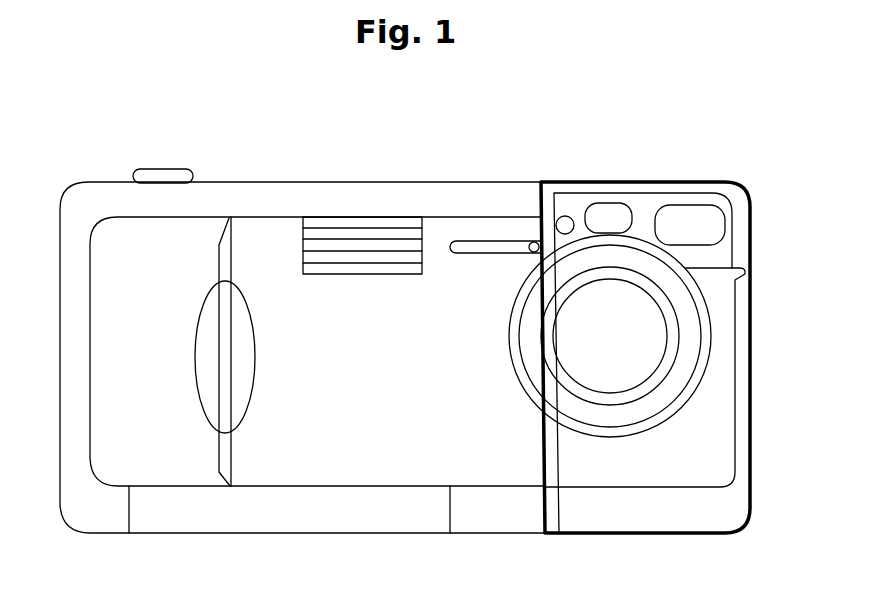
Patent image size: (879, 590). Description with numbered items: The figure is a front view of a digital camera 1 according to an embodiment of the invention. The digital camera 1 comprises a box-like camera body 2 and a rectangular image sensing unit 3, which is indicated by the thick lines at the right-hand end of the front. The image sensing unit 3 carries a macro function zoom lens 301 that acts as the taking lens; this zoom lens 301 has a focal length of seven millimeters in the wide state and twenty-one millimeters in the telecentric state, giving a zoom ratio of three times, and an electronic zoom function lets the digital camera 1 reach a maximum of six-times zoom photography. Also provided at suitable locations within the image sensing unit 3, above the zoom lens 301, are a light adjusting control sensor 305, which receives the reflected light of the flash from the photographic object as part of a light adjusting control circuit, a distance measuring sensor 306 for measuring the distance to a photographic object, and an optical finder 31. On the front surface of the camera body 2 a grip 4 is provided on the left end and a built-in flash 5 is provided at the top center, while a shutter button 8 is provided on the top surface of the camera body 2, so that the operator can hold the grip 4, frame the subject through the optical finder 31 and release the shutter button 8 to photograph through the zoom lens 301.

The digital camera 1 is at (407, 107).
The camera body 2 is at (247, 170).
The image sensing unit 3 is at (598, 166).
The grip 4 is at (98, 355).
The built-in flash 5 is at (372, 270).
The shutter button 8 is at (170, 173).
The optical finder 31 is at (683, 215).
The zoom lens 301 is at (712, 323).
The light adjusting control sensor 305 is at (565, 217).
The distance measuring sensor 306 is at (610, 213).